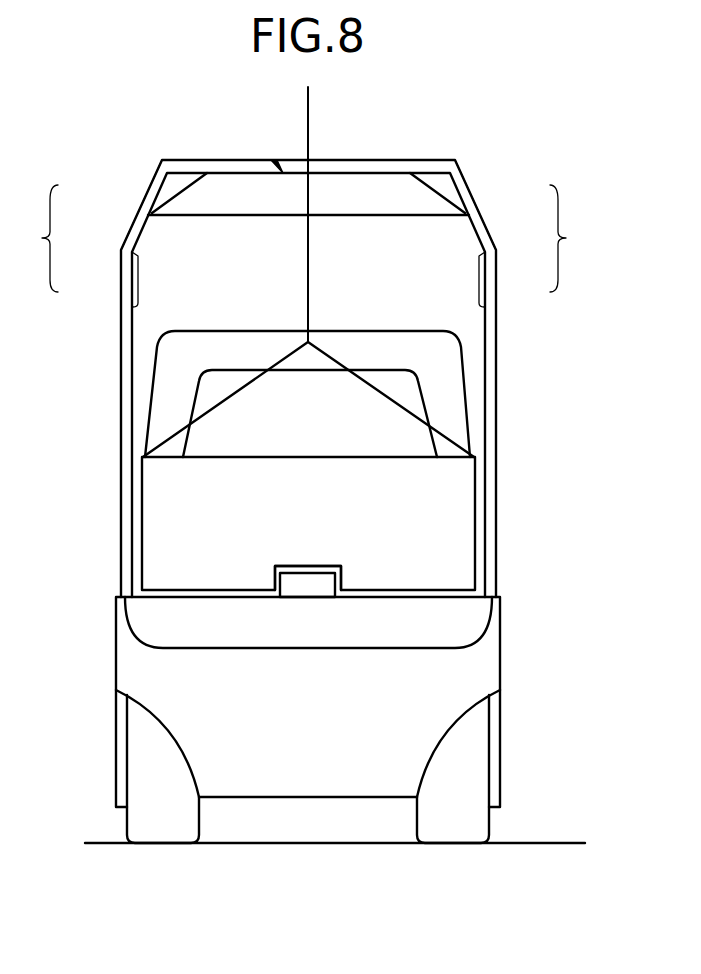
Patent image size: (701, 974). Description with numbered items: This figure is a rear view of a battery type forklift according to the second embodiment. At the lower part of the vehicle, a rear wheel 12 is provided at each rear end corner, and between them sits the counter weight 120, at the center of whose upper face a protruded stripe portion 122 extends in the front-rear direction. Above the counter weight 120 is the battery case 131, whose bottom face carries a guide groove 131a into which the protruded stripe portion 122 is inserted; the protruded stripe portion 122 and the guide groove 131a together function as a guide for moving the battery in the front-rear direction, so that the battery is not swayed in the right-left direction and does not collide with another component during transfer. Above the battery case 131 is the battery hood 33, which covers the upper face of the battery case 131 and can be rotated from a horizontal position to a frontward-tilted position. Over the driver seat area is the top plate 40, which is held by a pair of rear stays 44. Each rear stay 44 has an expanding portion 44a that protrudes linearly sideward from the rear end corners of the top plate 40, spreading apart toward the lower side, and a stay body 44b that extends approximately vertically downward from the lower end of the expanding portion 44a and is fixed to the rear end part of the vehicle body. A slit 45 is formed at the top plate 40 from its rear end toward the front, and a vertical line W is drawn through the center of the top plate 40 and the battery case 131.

The rear wheel 12 is at (138, 820).
The battery hood 33 is at (162, 392).
The top plate 40 is at (408, 160).
The rear stay 44 is at (308, 233).
The expanding portion 44a is at (142, 208).
The stay body 44b is at (128, 276).
The slit 45 is at (281, 172).
The counter weight 120 is at (488, 665).
The protruded stripe portion 122 is at (332, 593).
The battery case 131 is at (457, 482).
The guide groove 131a is at (308, 568).
The wire W is at (309, 118).